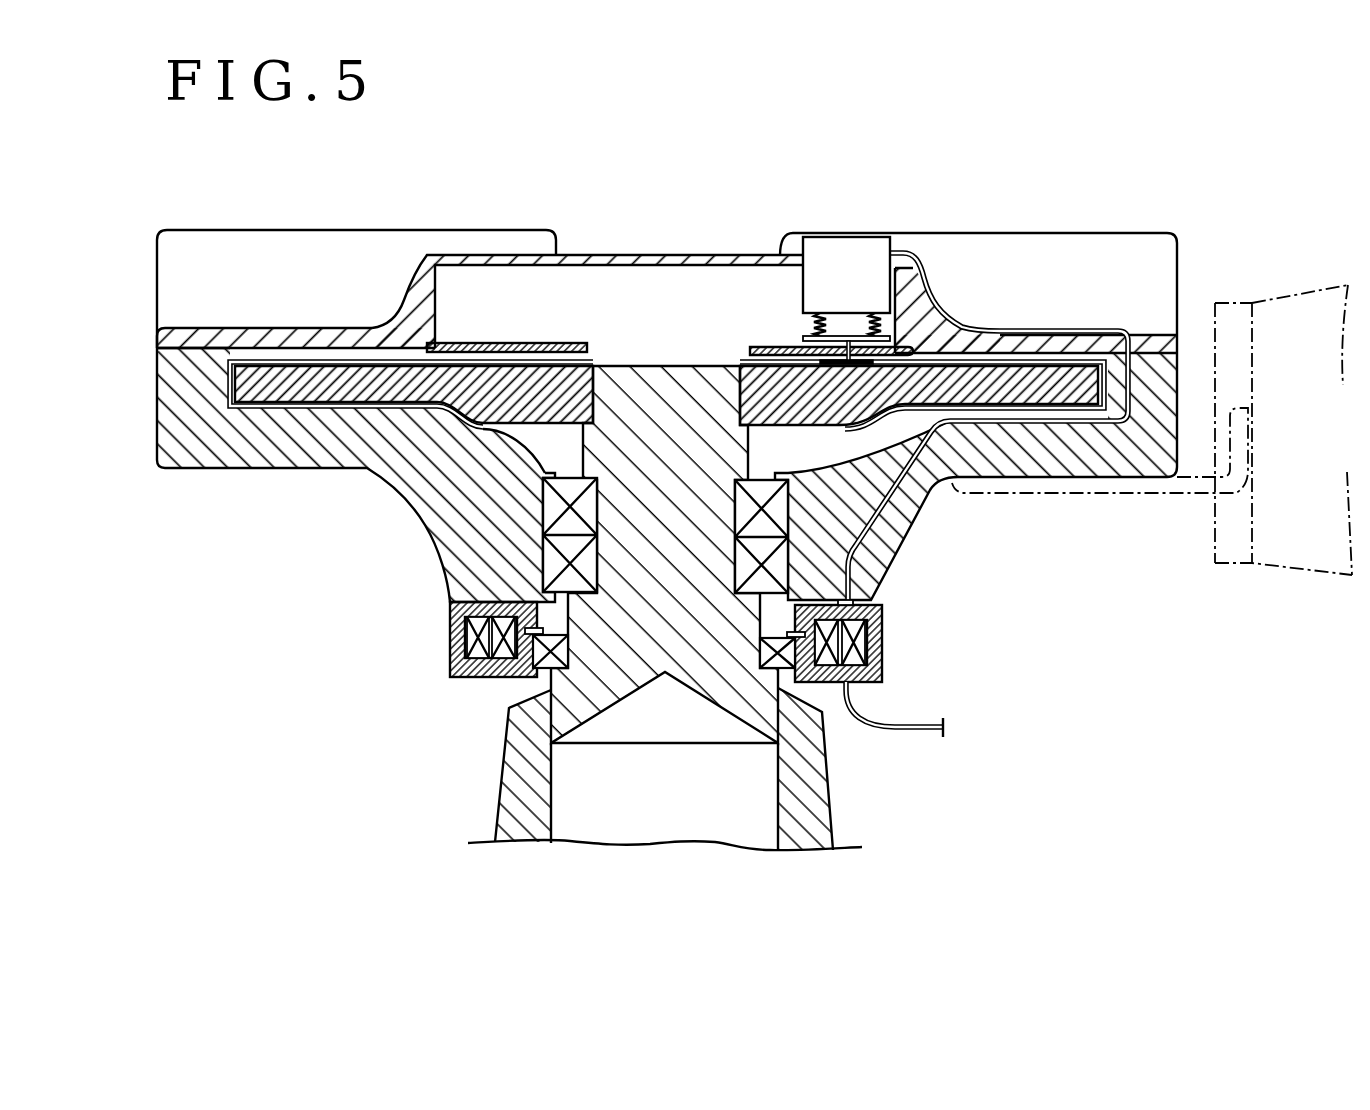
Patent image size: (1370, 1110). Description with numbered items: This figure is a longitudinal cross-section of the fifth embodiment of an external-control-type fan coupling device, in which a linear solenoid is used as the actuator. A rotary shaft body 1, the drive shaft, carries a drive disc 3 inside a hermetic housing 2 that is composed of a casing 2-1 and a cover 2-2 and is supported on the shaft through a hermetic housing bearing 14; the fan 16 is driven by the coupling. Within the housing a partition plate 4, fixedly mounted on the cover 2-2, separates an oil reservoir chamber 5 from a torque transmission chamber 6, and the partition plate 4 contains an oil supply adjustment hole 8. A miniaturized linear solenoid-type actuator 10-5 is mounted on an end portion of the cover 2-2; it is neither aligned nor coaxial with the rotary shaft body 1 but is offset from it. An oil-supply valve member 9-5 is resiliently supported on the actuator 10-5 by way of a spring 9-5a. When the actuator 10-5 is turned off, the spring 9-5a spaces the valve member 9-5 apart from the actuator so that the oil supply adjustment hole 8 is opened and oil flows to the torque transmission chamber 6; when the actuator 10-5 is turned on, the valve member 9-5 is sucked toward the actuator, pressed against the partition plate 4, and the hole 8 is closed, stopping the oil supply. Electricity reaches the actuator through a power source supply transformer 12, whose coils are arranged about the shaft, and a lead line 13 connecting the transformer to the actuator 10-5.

The rotary shaft body 1 is at (817, 798).
The hermetic housing 2 is at (627, 354).
The casing 2-1 is at (242, 460).
The cover 2-2 is at (170, 342).
The drive disc 3 is at (311, 377).
The partition plate 4 is at (568, 343).
The oil reservoir chamber 5 is at (458, 288).
The torque transmission chamber 6 is at (517, 440).
The oil supply adjustment hole 8 is at (851, 347).
The oil-supply valve member 9-5 is at (788, 363).
The spring 9-5a is at (815, 323).
The linear solenoid-type miniaturized actuator 10-5 is at (828, 250).
The power source supply transformer 12 is at (897, 647).
The lead line 13 is at (1036, 330).
The hermetic housing bearing 14 is at (547, 507).
The fan 16 is at (1297, 555).